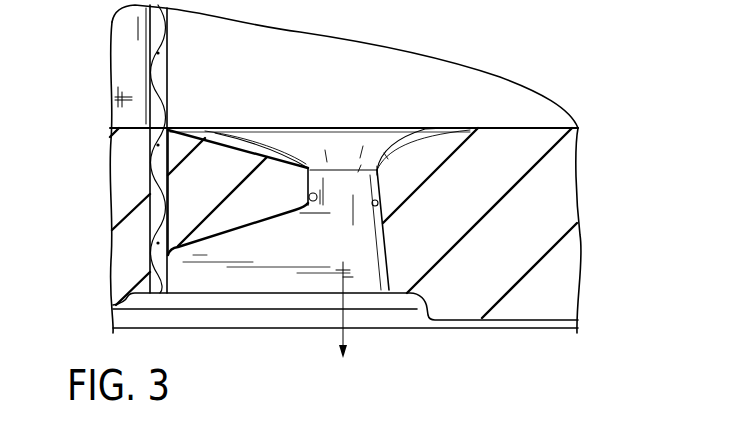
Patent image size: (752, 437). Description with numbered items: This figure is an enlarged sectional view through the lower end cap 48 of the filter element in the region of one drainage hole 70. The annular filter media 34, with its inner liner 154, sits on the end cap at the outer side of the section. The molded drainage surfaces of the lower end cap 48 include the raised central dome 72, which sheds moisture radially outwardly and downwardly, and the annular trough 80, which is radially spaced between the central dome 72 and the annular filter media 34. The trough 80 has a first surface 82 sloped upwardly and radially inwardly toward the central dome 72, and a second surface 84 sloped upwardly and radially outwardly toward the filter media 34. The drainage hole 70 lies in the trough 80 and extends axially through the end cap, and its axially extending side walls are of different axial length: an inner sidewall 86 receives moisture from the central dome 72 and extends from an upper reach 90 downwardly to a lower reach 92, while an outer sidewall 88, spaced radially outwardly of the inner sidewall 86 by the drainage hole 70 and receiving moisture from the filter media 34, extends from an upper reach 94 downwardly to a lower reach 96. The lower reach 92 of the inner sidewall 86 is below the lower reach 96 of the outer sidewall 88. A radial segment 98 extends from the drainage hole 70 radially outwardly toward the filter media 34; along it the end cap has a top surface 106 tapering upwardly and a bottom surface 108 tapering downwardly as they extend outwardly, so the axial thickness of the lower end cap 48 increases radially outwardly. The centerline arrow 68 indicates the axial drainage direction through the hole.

The annular filter media 34 is at (122, 62).
The inner liner 154 is at (157, 163).
The radial segment 98 is at (186, 210).
The upper reach 94 is at (262, 168).
The top surface 106 is at (233, 137).
The second surface 84 is at (283, 147).
The annular trough 80 is at (343, 147).
The drainage hole 70 is at (348, 177).
The first surface 82 is at (403, 140).
The upper reach 90 is at (378, 175).
The outer sidewall 88 is at (309, 196).
The inner sidewall 86 is at (378, 203).
The lower reach 96 is at (307, 218).
The bottom surface 108 is at (258, 230).
The lower reach 92 is at (390, 292).
The centerline 68 is at (343, 333).
The lower end cap 48 is at (567, 203).
The central dome 72 is at (557, 122).